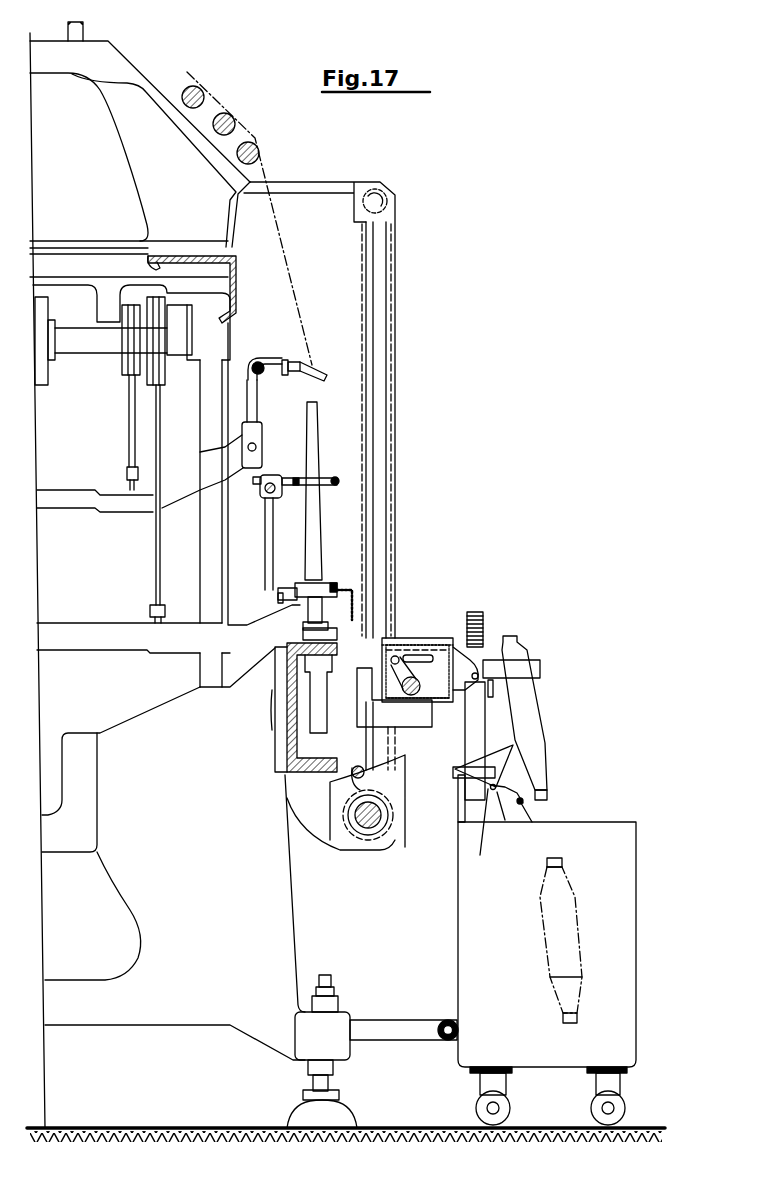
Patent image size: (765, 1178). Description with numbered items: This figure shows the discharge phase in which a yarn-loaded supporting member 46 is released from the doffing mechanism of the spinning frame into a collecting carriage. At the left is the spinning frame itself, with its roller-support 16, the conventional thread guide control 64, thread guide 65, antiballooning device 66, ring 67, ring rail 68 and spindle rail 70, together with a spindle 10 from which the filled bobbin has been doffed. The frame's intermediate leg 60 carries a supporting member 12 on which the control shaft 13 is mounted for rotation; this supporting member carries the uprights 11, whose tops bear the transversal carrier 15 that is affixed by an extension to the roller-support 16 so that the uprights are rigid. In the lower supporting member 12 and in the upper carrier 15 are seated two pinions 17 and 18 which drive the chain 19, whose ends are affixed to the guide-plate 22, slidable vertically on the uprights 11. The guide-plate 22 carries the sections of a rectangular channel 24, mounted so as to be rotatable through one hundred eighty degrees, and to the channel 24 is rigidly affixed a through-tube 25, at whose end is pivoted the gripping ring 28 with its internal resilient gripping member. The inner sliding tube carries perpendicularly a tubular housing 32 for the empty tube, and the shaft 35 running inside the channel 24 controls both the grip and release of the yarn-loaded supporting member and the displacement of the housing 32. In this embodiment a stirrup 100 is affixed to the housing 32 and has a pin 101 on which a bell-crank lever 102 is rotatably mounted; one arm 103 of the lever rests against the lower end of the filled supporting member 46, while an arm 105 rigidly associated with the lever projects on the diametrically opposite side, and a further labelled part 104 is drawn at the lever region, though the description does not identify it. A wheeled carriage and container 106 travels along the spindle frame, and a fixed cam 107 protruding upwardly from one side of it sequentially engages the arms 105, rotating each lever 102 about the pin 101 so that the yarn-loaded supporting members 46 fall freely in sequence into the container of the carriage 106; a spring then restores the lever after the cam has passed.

The spindle 10 is at (315, 502).
The upright 11 is at (396, 348).
The supporting member 12 is at (357, 842).
The control shaft 13 is at (368, 818).
The transversal carrier 15 is at (381, 185).
The roller-support 16 is at (171, 575).
The pinion 17 is at (387, 818).
The pinion 18 is at (394, 194).
The chain 19 is at (388, 375).
The guide-plate 22 is at (377, 715).
The rectangular channel 24 is at (422, 637).
The through-tube 25 is at (446, 640).
The ring 28 is at (525, 665).
The tubular housing 32 is at (463, 734).
The shaft 35 is at (432, 702).
The filled bobbin 46 is at (533, 717).
The intermediate leg 60 is at (278, 893).
The thread guide control 64 is at (77, 500).
The thread guide 65 is at (303, 362).
The antiballooning device 66 is at (334, 477).
The ring 67 is at (335, 583).
The ring rail 68 is at (288, 588).
The spindle rail 70 is at (292, 703).
The stirrup 100 is at (480, 855).
The pin 101 is at (505, 820).
The bell-crank lever 102 is at (532, 822).
The arm 103 is at (521, 793).
The wedge 104 is at (508, 763).
The arm 105 is at (453, 772).
The carriage and container 106 is at (623, 953).
The fixed cam 107 is at (460, 812).